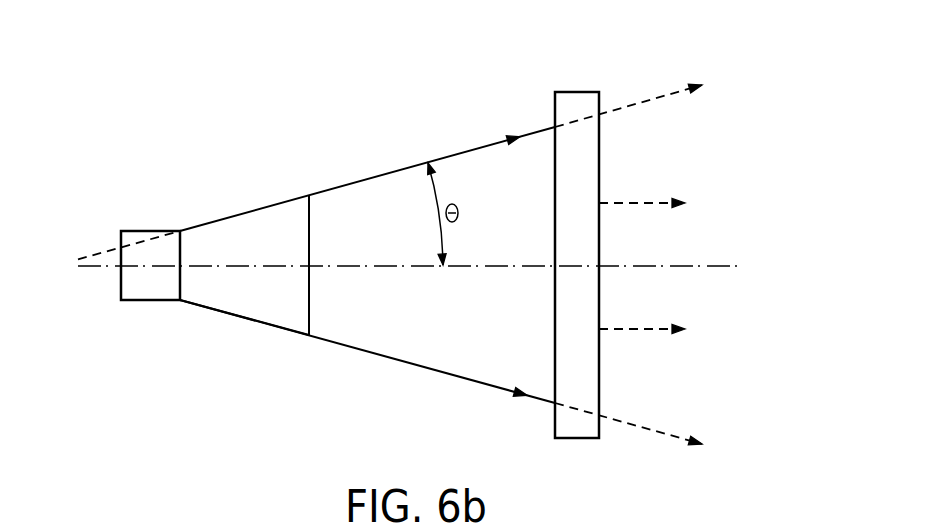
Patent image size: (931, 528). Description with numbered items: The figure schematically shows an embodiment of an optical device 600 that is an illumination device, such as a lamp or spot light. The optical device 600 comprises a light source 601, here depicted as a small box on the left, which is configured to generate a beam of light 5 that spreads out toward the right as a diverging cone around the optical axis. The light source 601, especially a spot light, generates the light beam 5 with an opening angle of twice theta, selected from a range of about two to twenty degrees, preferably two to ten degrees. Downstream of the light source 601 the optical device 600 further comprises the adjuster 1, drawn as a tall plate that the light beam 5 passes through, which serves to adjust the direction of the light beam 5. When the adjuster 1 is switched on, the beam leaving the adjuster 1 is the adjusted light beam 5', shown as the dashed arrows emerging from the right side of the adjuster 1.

The adjuster 1 is at (578, 97).
The light beam 5 is at (390, 246).
The adjusted light beam 5' is at (642, 292).
The optical device 600 is at (327, 163).
The light source 601 is at (245, 310).